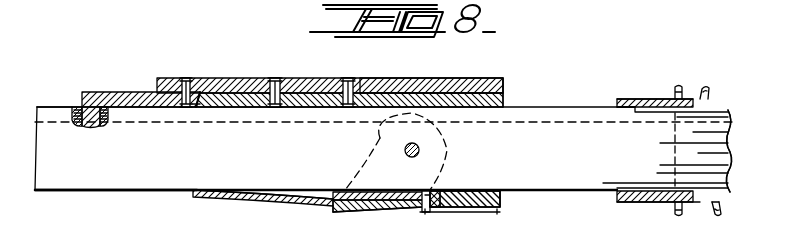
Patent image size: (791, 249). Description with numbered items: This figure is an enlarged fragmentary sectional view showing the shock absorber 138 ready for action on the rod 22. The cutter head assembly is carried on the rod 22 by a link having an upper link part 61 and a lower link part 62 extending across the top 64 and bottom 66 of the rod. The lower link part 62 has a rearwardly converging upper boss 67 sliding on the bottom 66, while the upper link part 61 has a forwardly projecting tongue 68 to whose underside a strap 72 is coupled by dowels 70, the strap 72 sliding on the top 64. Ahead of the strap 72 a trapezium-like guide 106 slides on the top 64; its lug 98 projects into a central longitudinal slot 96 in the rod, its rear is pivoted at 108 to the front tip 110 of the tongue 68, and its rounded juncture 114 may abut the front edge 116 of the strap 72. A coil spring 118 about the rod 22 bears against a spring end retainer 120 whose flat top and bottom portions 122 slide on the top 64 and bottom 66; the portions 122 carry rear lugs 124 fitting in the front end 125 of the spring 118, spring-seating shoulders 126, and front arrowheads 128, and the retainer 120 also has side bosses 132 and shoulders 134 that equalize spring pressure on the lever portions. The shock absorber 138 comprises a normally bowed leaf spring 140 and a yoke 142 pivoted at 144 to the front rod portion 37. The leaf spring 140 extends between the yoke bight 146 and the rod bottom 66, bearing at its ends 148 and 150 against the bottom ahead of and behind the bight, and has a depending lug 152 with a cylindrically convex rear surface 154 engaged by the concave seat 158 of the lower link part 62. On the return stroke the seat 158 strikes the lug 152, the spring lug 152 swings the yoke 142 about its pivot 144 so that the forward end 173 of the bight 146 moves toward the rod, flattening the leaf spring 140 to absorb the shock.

The rod 22 is at (95, 197).
The front rod portion 37 is at (52, 178).
The upper link part 61 is at (489, 71).
The lower link part 62 is at (500, 214).
The top of the rod 64 is at (53, 106).
The bottom of the rod 66 is at (122, 191).
The upper boss 67 is at (475, 186).
The tongue 68 is at (437, 77).
The dowels 70 is at (347, 77).
The strap 72 is at (250, 108).
The central longitudinal slot 96 is at (106, 125).
The lug 98 is at (72, 124).
The trapezium-like guide 106 is at (131, 84).
The pivot 108 is at (186, 77).
The front tip of the tongue 110 is at (166, 77).
The rounded juncture 114 is at (207, 108).
The front edge of the strap 116 is at (200, 93).
The coil spring 118 is at (686, 85).
The spring end retainer 120 is at (700, 106).
The top and bottom portions of the retainer 122 is at (660, 98).
The rear lugs 124 is at (708, 88).
The front end of the spring 125 is at (716, 215).
The spring-seating shoulders 126 is at (740, 151).
The front arrowheads 128 is at (632, 113).
The side bosses 132 is at (658, 138).
The shoulders 134 is at (645, 100).
The shock absorber 138 is at (338, 222).
The leaf spring 140 is at (272, 205).
The yoke 142 is at (369, 214).
The yoke pivot 144 is at (405, 152).
The yoke bight 146 is at (395, 212).
The front end of the leaf spring 148 is at (193, 190).
The rear end of the leaf spring 150 is at (434, 196).
The depending lug 152 is at (426, 213).
The cylindrically convex rear surface 154 is at (440, 208).
The concave seat 158 is at (424, 195).
The forward end of the yoke bight 173 is at (329, 211).